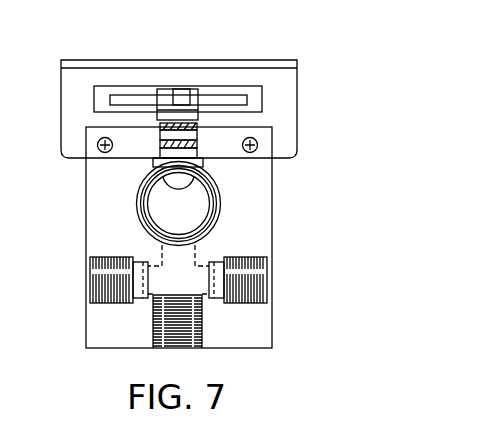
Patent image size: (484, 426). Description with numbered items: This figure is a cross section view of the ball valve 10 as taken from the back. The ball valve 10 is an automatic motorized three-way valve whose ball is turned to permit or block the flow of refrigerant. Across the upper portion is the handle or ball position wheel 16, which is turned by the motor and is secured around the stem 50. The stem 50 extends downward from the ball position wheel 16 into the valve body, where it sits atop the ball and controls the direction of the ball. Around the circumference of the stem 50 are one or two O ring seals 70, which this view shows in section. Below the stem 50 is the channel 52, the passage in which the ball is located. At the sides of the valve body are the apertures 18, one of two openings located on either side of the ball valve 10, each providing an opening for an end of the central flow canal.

The ball valve 10 is at (330, 179).
The ball position wheel 16 is at (243, 100).
The aperture 18 is at (193, 212).
The stem 50 is at (185, 151).
The channel 52 is at (163, 212).
The O ring seals 70 is at (160, 126).